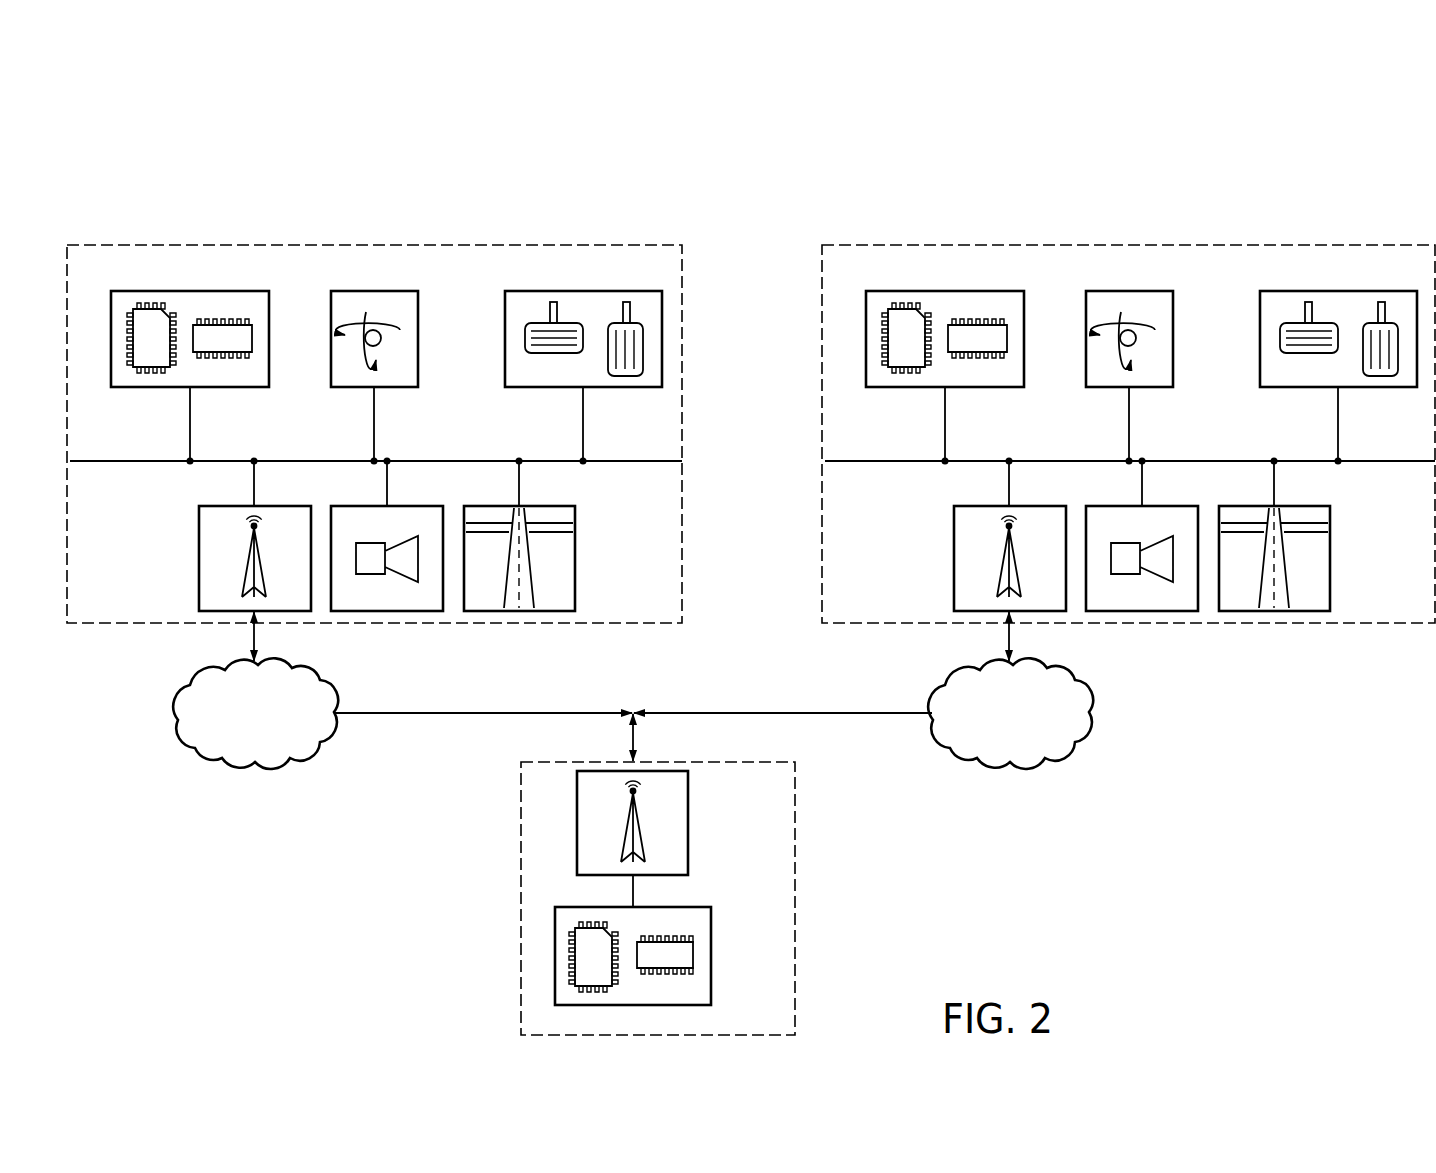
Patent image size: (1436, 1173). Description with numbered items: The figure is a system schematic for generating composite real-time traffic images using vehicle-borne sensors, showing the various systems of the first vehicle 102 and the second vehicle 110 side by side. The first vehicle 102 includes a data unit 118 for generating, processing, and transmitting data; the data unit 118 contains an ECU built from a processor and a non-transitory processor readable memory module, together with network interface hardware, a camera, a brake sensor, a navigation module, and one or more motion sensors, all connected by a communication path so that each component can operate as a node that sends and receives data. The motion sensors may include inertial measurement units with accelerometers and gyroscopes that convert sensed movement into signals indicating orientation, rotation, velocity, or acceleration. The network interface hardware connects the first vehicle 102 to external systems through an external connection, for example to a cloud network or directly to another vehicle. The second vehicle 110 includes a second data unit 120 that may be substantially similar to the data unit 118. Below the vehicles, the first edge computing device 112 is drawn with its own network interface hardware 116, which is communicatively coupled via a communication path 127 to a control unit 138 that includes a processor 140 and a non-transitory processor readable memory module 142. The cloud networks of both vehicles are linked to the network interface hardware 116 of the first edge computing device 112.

The first vehicle 102 is at (504, 216).
The second vehicle 110 is at (1236, 211).
The first edge computing device 112 is at (795, 820).
The network interface hardware 116 is at (688, 822).
The data unit 118 is at (390, 246).
The second data unit 120 is at (1143, 246).
The communication path 127 is at (633, 904).
The control unit 138 is at (711, 908).
The processor 140 is at (575, 928).
The non-transitory processor readable memory module 142 is at (693, 957).